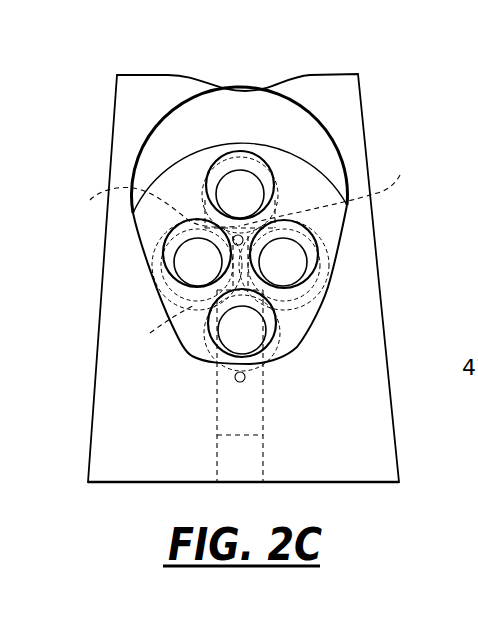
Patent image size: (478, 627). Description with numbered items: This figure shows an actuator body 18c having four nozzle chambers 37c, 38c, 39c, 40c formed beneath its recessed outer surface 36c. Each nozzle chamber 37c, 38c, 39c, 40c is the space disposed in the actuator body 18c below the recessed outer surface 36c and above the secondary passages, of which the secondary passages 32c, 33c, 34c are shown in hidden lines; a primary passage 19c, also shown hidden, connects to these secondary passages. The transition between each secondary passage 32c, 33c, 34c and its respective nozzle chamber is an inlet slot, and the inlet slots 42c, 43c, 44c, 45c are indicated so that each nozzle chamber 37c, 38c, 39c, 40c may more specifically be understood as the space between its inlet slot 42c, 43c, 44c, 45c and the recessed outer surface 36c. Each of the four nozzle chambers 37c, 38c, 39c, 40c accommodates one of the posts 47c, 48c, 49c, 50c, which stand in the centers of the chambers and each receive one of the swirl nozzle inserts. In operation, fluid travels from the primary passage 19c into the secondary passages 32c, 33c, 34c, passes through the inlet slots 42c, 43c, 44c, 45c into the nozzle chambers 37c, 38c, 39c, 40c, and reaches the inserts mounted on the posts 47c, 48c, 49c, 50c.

The actuator body 18c is at (148, 61).
The recessed outer surface 36c is at (183, 183).
The inlet slot 44c is at (324, 192).
The nozzle chamber 37c is at (213, 362).
The nozzle chamber 39c is at (232, 167).
The post 49c is at (243, 192).
The nozzle chamber 40c is at (177, 242).
The post 50c is at (183, 260).
The nozzle chamber 38c is at (296, 251).
The post 48c is at (294, 271).
The post 47c is at (277, 323).
The inlet slot 42c is at (267, 380).
The primary passage 19c is at (217, 427).
The secondary passage 33c is at (146, 208).
The inlet slot 43c is at (335, 189).
The secondary passage 32c is at (300, 256).
The inlet slot 45c is at (160, 288).
The secondary passage 34c is at (150, 333).